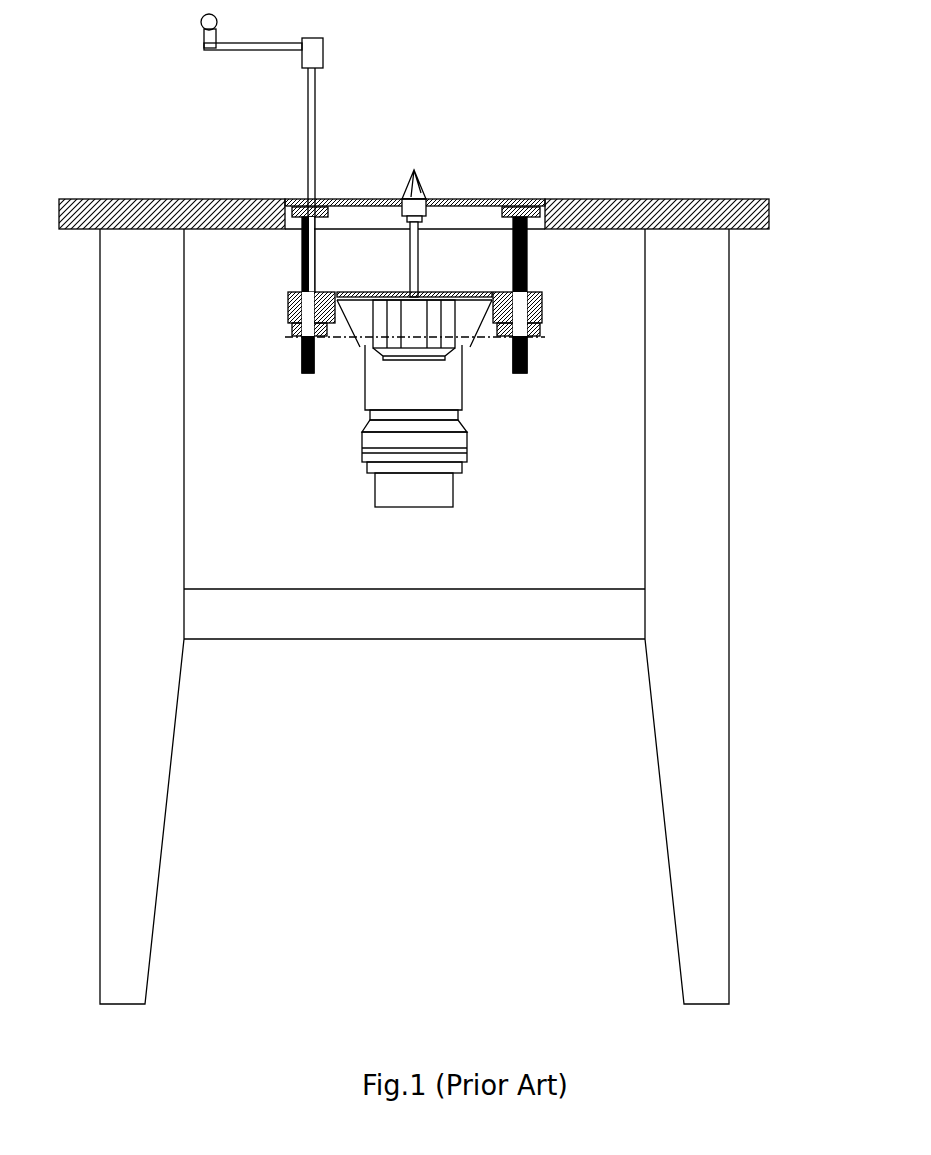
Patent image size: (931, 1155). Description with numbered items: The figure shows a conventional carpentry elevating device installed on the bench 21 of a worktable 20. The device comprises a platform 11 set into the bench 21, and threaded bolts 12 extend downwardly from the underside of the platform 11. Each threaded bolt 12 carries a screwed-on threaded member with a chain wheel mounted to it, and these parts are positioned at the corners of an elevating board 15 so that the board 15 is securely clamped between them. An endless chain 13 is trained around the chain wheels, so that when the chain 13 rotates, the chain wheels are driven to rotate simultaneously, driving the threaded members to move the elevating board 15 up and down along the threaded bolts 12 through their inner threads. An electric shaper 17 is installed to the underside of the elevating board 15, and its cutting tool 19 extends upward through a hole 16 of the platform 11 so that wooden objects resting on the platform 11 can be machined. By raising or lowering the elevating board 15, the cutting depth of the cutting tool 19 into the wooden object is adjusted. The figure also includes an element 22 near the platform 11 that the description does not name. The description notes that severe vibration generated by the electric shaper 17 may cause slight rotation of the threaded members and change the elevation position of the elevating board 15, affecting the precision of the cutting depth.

The platform 11 is at (487, 198).
The threaded bolts 12 is at (530, 263).
The endless chain 13 is at (483, 342).
The elevating board 15 is at (542, 302).
The hole 16 is at (400, 197).
The electric shaper 17 is at (453, 445).
The cutting tool 19 is at (411, 170).
The worktable 20 is at (748, 494).
The bench 21 is at (660, 199).
The clamp block 22 is at (296, 222).